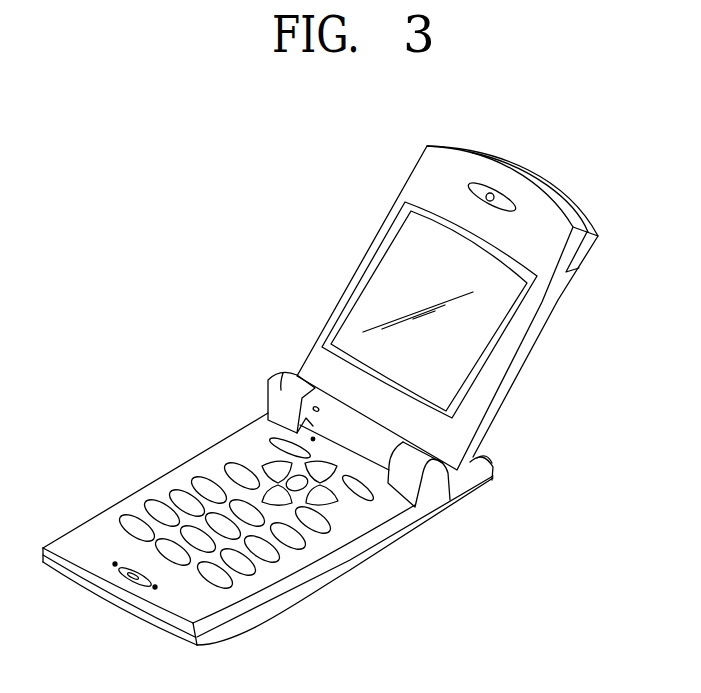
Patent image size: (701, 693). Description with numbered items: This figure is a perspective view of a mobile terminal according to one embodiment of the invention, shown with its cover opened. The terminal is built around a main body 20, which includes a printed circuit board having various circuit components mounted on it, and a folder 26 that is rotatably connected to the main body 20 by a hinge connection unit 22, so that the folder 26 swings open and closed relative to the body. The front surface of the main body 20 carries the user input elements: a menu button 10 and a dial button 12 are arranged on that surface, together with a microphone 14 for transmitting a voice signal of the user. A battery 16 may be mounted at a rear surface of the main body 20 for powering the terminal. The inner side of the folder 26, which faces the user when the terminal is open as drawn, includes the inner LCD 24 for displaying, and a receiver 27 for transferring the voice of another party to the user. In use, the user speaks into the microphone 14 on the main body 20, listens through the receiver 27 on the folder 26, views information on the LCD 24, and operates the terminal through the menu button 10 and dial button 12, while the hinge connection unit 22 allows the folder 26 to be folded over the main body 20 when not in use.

The menu button 10 is at (266, 463).
The dial button 12 is at (177, 496).
The microphone 14 is at (116, 568).
The battery 16 is at (327, 582).
The main body 20 is at (86, 513).
The hinge connection unit 22 is at (270, 379).
The LCD 24 is at (388, 283).
The folder 26 is at (542, 363).
The receiver 27 is at (491, 194).